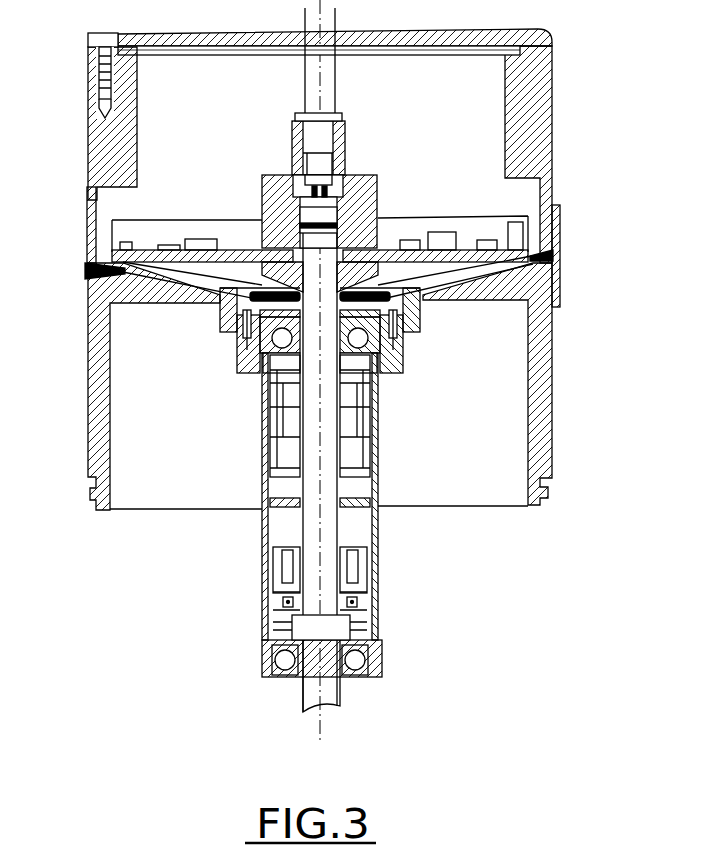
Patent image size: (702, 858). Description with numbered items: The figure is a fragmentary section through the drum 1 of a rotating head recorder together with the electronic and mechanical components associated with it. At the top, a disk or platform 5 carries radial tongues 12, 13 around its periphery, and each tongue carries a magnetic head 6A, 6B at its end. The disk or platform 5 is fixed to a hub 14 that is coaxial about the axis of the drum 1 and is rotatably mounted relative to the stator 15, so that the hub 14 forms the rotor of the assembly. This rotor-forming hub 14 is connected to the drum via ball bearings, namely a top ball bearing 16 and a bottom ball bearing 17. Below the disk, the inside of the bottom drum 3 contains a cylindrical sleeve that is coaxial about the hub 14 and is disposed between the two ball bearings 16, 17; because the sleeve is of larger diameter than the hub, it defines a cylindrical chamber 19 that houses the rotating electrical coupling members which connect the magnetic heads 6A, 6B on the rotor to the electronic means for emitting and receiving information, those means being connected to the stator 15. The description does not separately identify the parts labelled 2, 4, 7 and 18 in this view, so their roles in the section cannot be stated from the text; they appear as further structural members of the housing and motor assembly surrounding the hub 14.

The drum 1 is at (573, 126).
The cover 2 is at (88, 135).
The bottom drum 3 is at (88, 380).
The disc 4 is at (84, 260).
The disk or platform 5 is at (368, 214).
The magnetic head 6A is at (90, 266).
The magnetic head 6B is at (557, 253).
The clamp ring 7 is at (560, 228).
The radial tongue 12 is at (108, 256).
The radial tongue 13 is at (515, 220).
The hub 14 is at (310, 513).
The stator 15 is at (175, 484).
The top ball bearing 16 is at (407, 362).
The bottom ball bearing 17 is at (384, 679).
The motor housing 18 is at (380, 537).
The cylindrical chamber 19 is at (362, 418).